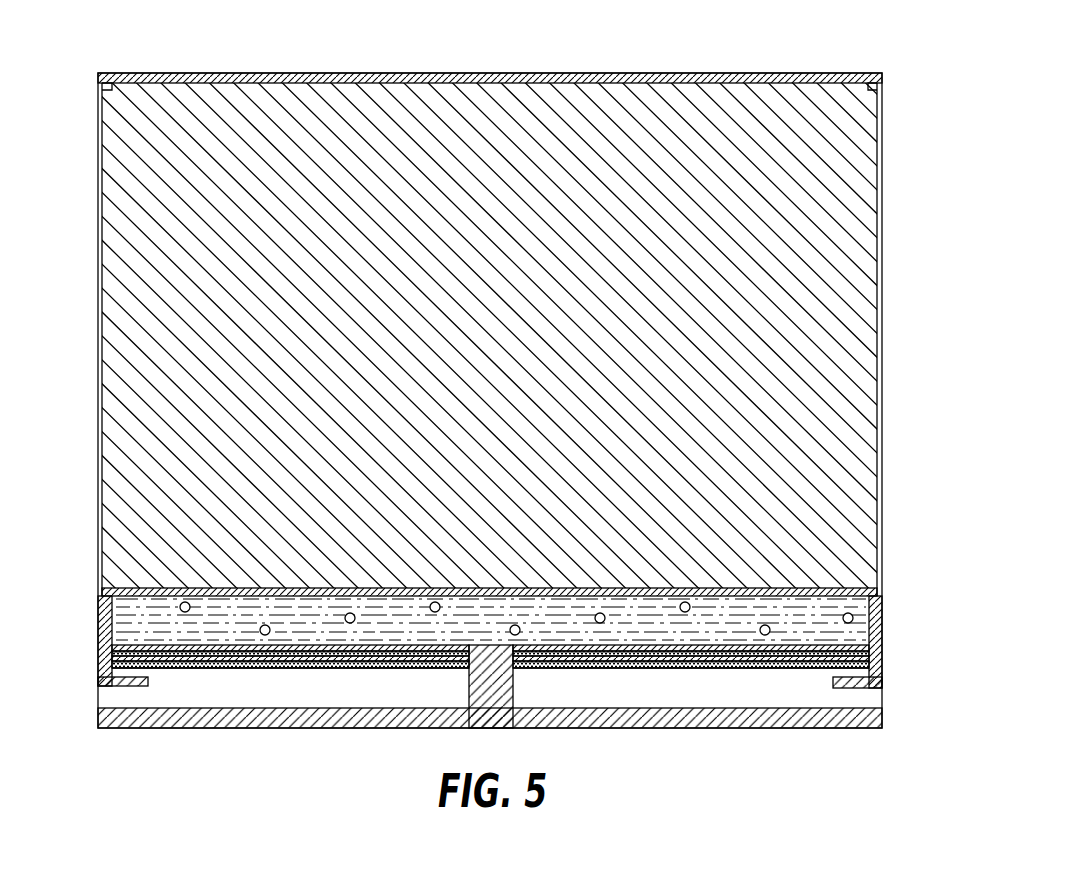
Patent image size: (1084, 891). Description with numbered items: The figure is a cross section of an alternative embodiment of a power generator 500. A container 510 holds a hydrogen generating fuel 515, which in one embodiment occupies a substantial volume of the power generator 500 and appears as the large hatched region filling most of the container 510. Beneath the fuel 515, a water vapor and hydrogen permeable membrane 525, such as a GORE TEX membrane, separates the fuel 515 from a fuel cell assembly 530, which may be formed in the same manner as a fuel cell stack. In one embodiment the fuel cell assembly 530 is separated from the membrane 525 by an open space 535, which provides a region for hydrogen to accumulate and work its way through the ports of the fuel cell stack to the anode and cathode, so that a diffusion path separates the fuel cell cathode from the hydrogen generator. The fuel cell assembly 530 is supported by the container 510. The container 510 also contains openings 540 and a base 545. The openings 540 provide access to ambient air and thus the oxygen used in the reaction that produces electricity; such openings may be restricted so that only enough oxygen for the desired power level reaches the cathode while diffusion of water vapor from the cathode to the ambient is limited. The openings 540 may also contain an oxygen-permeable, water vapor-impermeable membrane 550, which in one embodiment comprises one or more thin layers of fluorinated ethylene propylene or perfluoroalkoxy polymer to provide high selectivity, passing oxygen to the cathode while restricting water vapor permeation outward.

The power generator 500 is at (167, 25).
The container 510 is at (882, 378).
The hydrogen generating fuel 515 is at (852, 178).
The membrane 525 is at (850, 588).
The fuel cell assembly 530 is at (140, 643).
The open space 535 is at (829, 627).
The openings 540 is at (126, 698).
The base 545 is at (882, 716).
The membrane 550 is at (98, 697).